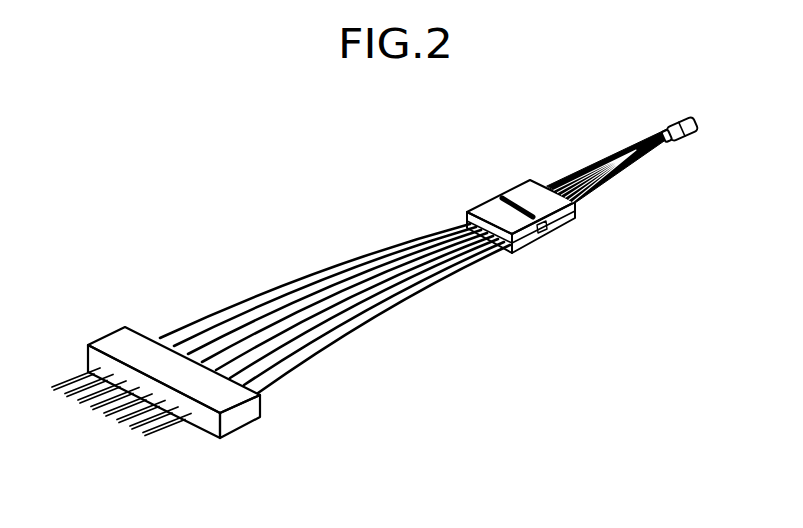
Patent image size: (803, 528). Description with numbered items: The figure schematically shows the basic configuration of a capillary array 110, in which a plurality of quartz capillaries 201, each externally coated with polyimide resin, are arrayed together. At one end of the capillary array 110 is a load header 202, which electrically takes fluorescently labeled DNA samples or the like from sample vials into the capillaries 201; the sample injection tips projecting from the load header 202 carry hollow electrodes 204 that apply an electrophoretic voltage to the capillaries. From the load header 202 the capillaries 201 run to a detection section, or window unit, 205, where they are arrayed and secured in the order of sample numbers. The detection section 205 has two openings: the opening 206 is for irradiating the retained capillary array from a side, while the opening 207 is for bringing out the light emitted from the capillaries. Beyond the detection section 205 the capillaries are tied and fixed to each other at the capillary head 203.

The capillary array 110 is at (287, 168).
The capillaries 201 is at (390, 313).
The load header 202 is at (247, 422).
The capillary head 203 is at (686, 140).
The hollow electrodes 204 is at (175, 440).
The detection section (window unit) 205 is at (530, 192).
The opening 206 is at (547, 231).
The opening 207 is at (502, 195).